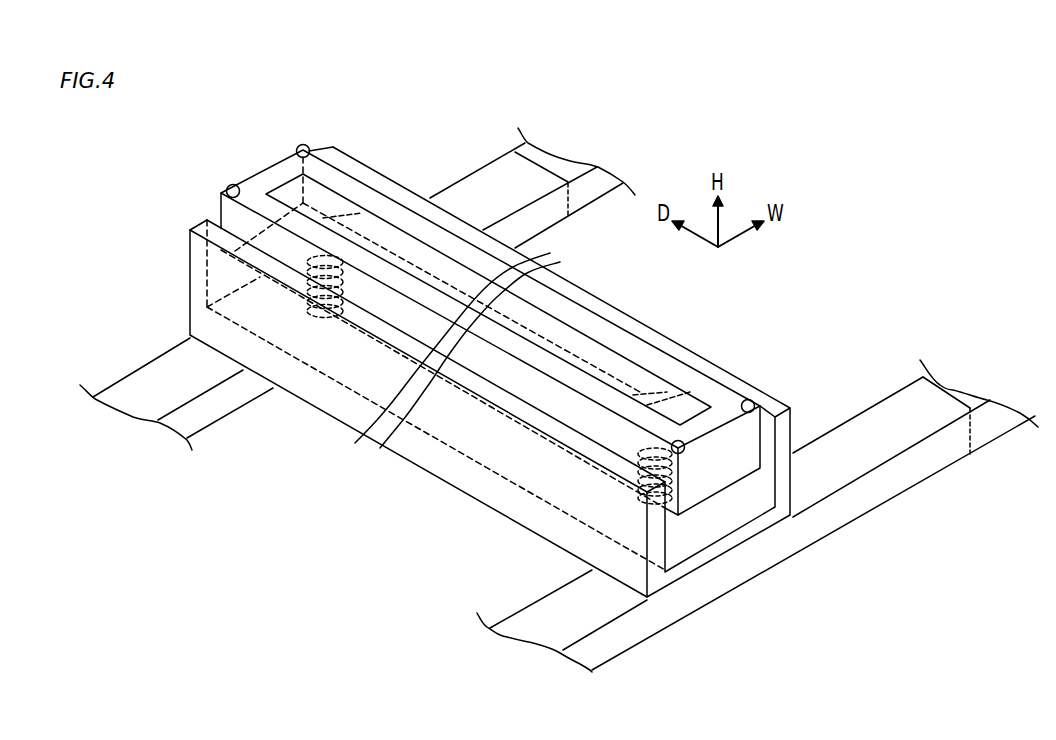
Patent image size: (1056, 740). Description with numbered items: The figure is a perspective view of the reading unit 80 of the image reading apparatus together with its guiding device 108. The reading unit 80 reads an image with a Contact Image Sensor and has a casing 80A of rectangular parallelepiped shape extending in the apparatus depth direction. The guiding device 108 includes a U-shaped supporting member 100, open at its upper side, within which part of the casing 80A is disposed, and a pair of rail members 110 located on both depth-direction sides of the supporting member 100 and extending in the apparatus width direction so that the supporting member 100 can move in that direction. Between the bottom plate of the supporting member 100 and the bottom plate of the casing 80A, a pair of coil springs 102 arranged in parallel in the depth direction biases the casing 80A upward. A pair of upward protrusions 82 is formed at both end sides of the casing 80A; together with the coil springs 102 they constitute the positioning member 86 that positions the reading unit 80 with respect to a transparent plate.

The reading unit 80 is at (490, 332).
The casing 80A is at (664, 364).
The protrusions 82 is at (300, 151).
The positioning member 86 is at (496, 354).
The supporting member 100 is at (476, 499).
The coil spring 102 is at (353, 316).
The guiding device 108 is at (559, 400).
The rail members 110 is at (197, 418).